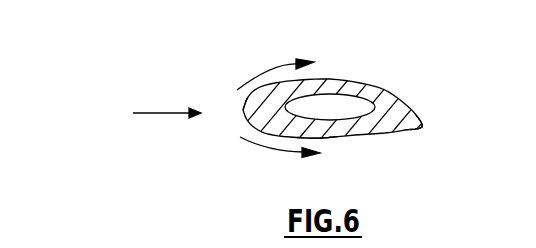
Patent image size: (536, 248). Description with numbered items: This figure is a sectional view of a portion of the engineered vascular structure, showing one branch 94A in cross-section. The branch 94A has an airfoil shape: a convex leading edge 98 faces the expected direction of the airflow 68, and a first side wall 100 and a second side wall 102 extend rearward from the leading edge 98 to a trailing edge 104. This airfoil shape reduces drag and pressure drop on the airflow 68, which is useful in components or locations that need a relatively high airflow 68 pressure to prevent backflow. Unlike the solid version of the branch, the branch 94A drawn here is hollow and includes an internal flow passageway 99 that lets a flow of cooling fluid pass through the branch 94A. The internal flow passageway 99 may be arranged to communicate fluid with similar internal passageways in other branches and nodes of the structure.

The airflow 68 is at (160, 112).
The branch 94A is at (353, 75).
The leading edge 98 is at (243, 112).
The internal flow passageway 99 is at (314, 106).
The first side wall 100 is at (390, 92).
The second side wall 102 is at (350, 136).
The trailing edge 104 is at (422, 127).